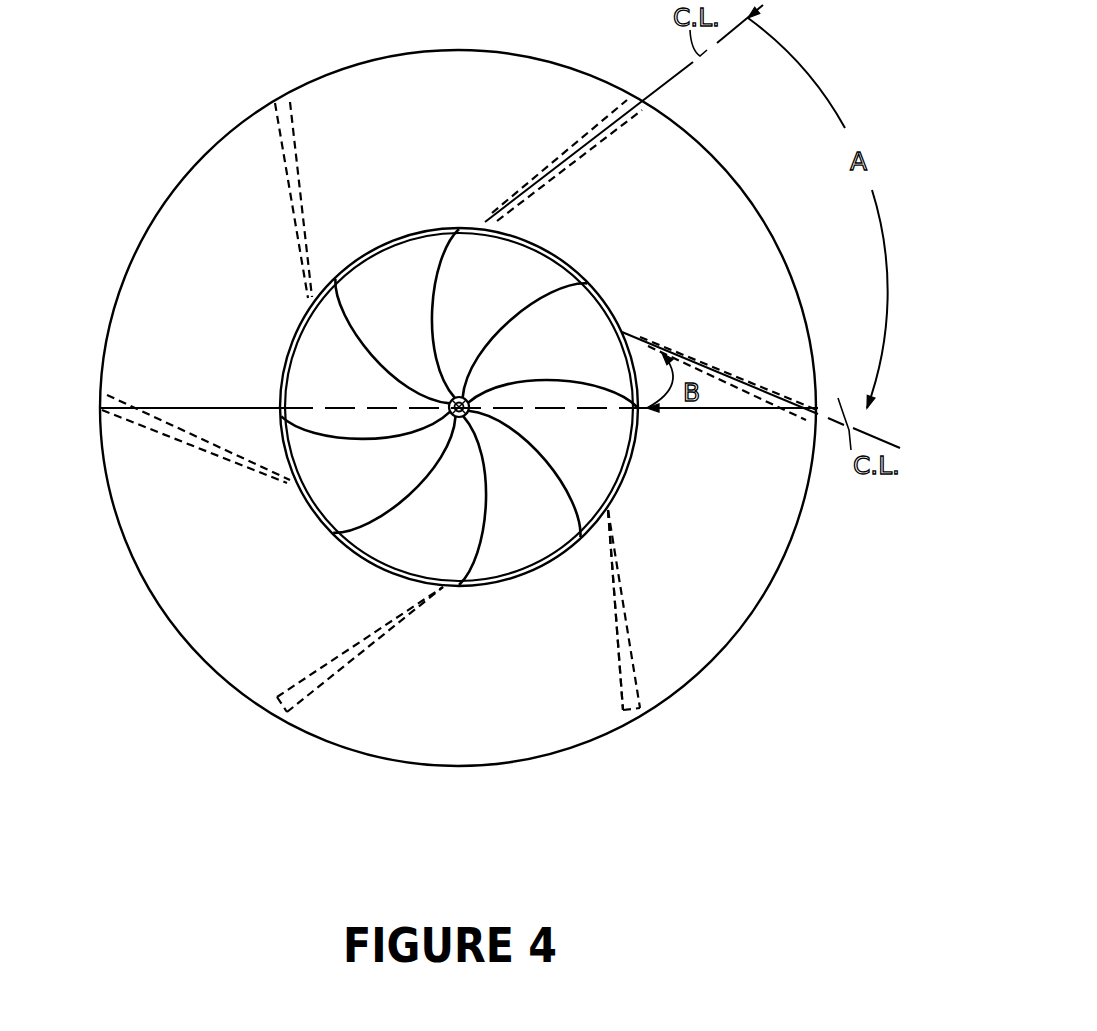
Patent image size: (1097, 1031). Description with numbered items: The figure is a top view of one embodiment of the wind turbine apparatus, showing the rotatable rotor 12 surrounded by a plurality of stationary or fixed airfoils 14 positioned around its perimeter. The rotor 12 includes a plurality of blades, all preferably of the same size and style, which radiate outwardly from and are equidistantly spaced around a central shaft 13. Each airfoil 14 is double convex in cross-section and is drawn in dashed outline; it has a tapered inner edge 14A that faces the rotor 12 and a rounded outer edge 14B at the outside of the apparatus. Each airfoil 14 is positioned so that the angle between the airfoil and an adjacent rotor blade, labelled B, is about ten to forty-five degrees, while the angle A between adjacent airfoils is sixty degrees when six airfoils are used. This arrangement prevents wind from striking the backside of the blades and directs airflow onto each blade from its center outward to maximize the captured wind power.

The rotor 12 is at (556, 287).
The central shaft 13 is at (467, 399).
The airfoil 14 is at (153, 437).
The tapered inner edge 14A is at (610, 508).
The outer edge 14B is at (622, 710).